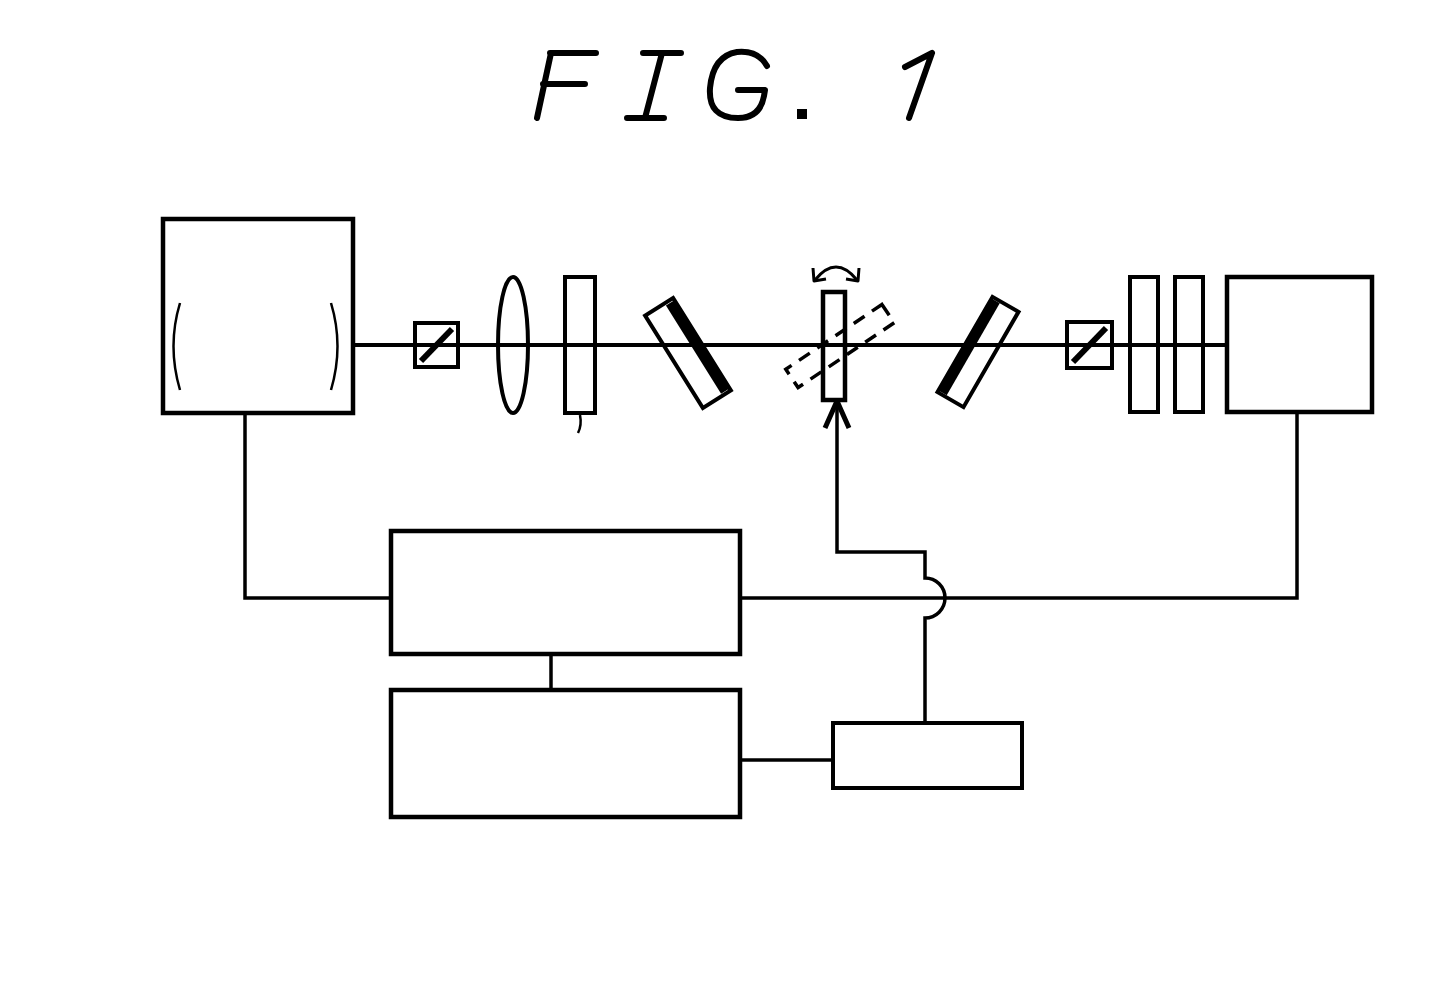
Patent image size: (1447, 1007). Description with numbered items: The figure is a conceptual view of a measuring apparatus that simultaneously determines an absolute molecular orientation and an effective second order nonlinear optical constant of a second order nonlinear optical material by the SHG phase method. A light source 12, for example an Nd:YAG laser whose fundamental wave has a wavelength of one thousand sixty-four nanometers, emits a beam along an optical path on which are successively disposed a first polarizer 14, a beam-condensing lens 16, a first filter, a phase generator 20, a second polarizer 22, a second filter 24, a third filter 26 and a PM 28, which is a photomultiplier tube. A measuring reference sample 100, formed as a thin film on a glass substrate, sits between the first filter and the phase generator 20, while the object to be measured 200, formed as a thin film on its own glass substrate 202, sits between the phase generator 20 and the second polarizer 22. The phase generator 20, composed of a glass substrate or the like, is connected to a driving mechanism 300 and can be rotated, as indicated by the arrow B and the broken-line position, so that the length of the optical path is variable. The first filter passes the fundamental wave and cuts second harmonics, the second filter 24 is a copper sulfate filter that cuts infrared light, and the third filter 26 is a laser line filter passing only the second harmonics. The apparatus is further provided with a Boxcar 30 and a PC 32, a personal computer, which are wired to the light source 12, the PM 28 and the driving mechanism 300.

The light source 12 is at (185, 415).
The first polarizer 14 is at (430, 367).
The beam-condensing lens 16 is at (513, 415).
The measuring reference sample 100 is at (688, 312).
The phase generator 20 is at (823, 325).
The object to be measured 200 is at (990, 298).
The glass substrate 202 is at (970, 397).
The second polarizer 22 is at (1060, 357).
The second filter 24 is at (1145, 413).
The third filter 26 is at (1190, 413).
The PM (photomultiplier tube) 28 is at (1372, 402).
The Boxcar 30 is at (740, 637).
The PC (personal computer) 32 is at (636, 818).
The driving mechanism 300 is at (930, 790).